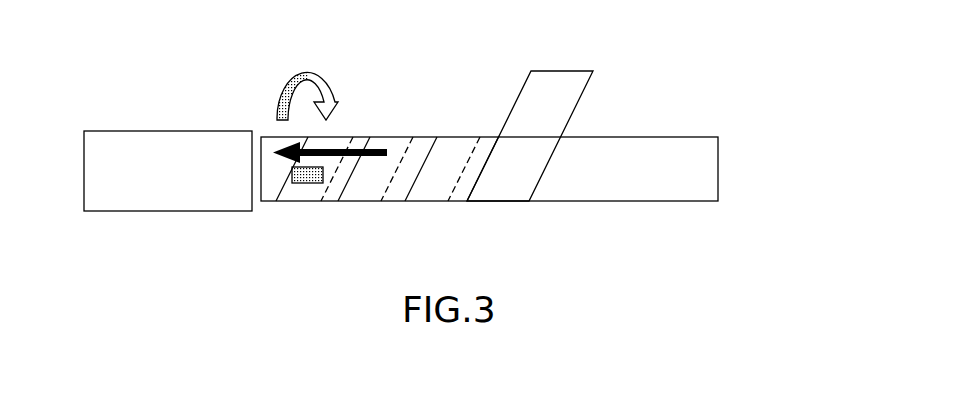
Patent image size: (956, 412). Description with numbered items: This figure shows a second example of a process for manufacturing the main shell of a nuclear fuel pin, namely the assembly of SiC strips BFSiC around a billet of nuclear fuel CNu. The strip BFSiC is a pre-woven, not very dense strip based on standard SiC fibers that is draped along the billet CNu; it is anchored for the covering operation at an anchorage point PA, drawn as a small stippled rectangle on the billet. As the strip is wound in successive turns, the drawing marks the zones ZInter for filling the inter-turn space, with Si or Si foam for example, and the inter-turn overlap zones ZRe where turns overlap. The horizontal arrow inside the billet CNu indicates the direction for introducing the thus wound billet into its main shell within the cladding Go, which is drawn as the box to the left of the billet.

The cladding Go is at (139, 142).
The billet of nuclear fuel CNu is at (712, 167).
The inter-turn overlap zone ZRe is at (476, 188).
The strip BFSiC is at (568, 109).
The zone for filling the inter-turn space ZInter is at (499, 135).
The anchorage point PA is at (308, 184).